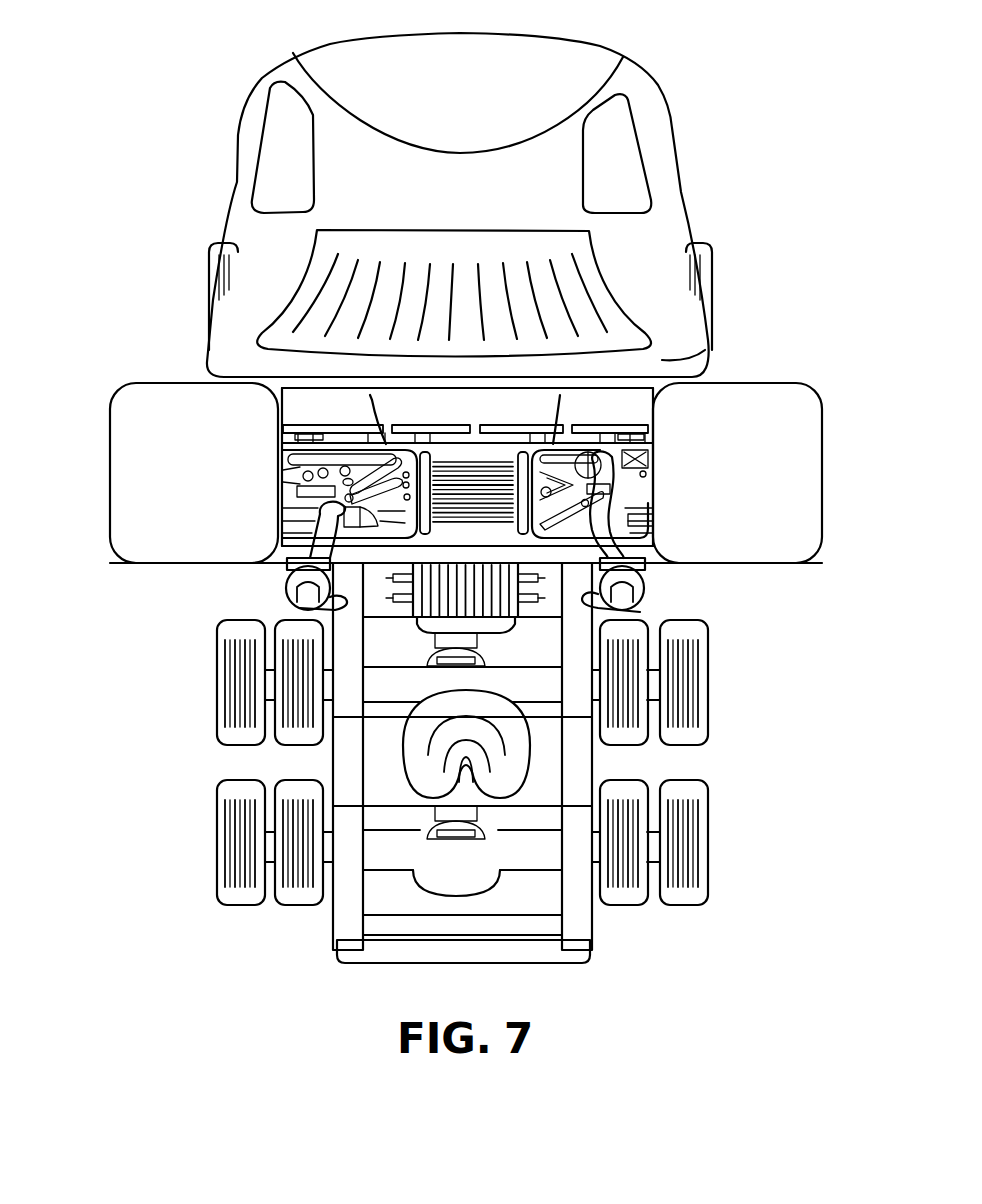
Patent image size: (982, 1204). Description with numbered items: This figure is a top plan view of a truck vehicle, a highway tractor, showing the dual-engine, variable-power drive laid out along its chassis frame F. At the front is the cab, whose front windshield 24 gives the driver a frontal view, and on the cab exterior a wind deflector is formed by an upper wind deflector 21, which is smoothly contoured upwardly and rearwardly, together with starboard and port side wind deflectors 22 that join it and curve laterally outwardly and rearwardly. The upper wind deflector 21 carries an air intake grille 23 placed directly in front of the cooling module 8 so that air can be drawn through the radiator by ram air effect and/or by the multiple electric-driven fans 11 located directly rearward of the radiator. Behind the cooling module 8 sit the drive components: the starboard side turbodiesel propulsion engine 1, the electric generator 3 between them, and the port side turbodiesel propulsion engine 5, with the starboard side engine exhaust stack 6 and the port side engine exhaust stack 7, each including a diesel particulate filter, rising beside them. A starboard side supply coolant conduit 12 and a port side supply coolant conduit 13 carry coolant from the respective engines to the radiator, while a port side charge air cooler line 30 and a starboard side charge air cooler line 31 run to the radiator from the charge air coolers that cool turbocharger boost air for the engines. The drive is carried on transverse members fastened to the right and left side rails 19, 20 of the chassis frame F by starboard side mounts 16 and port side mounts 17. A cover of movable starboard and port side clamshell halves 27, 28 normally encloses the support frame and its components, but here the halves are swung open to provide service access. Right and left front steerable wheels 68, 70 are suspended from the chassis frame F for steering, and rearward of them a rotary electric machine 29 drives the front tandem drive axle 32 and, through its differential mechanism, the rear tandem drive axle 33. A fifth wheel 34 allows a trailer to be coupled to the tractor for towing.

The front windshield 24 is at (573, 60).
The left front steerable wheel 70 is at (212, 252).
The right front steerable wheel 68 is at (694, 252).
The starboard side and port side wind deflectors 22 is at (253, 280).
The air intake grille 23 is at (603, 262).
The upper wind deflector 21 is at (687, 358).
The cooling module 8 is at (473, 403).
The port side supply coolant conduit 13 is at (370, 395).
The starboard side supply coolant conduit 12 is at (560, 395).
The electric-driven fans 11 is at (335, 425).
The port side charge air cooler line 30 is at (297, 438).
The starboard side charge air cooler line 31 is at (647, 440).
The port side turbodiesel propulsion engine 5 is at (293, 488).
The electric generator 3 is at (483, 525).
The starboard side turbodiesel propulsion engine 1 is at (660, 482).
The port side engine exhaust stack 7 is at (288, 583).
The starboard side engine exhaust stack 6 is at (648, 592).
The port side mounts 17 is at (300, 608).
The starboard side mounts 16 is at (640, 612).
The port side clamshell half 28 is at (108, 470).
The starboard side clamshell half 27 is at (823, 458).
The left side rail 20 is at (333, 928).
The right side rail 19 is at (597, 928).
The chassis frame F is at (350, 963).
The front tandem drive axle 32 is at (417, 682).
The rotary electric machine 29 is at (503, 634).
The fifth wheel 34 is at (473, 705).
The rear tandem drive axle 33 is at (447, 877).